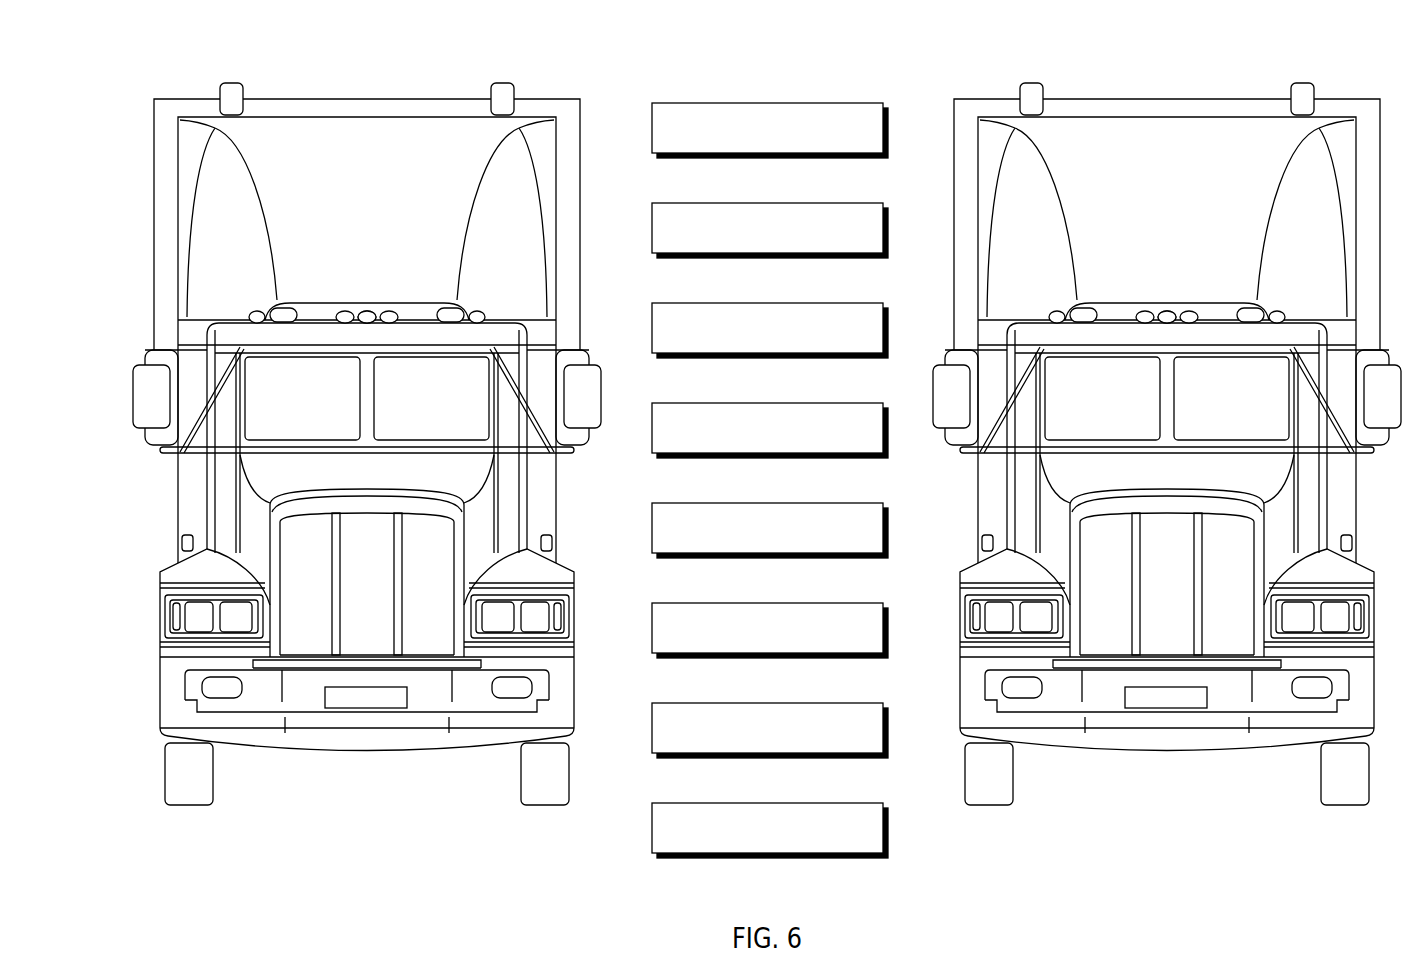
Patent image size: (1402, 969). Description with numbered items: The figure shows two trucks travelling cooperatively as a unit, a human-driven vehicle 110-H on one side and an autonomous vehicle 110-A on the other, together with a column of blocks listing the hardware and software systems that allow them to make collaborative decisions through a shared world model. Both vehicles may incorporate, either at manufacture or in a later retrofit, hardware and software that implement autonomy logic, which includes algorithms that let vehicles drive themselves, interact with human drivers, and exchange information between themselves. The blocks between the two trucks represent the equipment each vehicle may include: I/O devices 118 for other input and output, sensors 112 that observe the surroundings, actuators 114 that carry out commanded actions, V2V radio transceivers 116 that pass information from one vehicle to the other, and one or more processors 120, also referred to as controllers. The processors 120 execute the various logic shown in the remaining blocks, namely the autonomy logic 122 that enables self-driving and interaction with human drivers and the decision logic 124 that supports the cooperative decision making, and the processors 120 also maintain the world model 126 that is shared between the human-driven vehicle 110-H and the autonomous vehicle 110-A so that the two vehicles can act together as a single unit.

The human-driven vehicle 110-H is at (393, 50).
The autonomous vehicle 110-A is at (1193, 50).
The I/O devices 118 is at (837, 103).
The sensors 112 is at (837, 203).
The actuators 114 is at (837, 303).
The V2V radio transceivers 116 is at (837, 403).
The processors 120 is at (837, 503).
The autonomy logic 122 is at (837, 603).
The decision logic 124 is at (837, 703).
The world model 126 is at (837, 803).